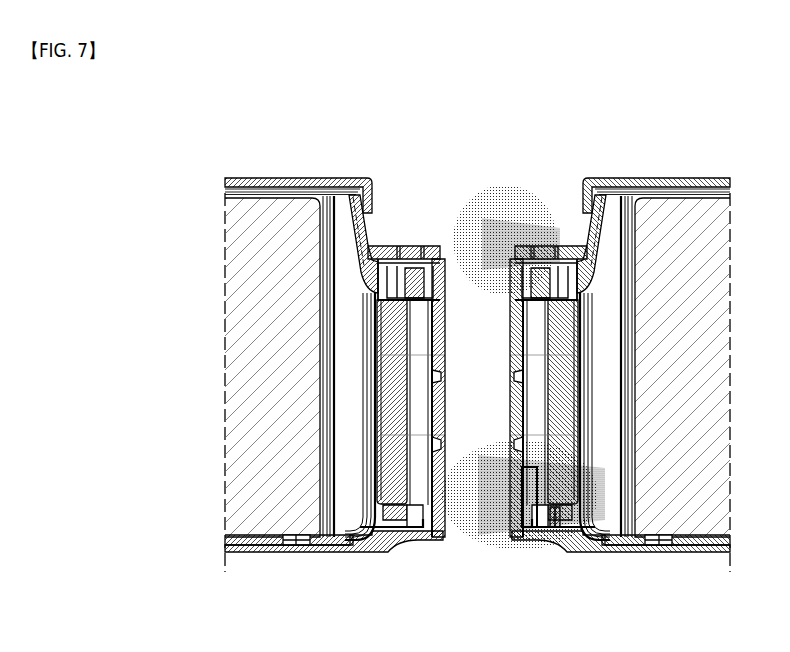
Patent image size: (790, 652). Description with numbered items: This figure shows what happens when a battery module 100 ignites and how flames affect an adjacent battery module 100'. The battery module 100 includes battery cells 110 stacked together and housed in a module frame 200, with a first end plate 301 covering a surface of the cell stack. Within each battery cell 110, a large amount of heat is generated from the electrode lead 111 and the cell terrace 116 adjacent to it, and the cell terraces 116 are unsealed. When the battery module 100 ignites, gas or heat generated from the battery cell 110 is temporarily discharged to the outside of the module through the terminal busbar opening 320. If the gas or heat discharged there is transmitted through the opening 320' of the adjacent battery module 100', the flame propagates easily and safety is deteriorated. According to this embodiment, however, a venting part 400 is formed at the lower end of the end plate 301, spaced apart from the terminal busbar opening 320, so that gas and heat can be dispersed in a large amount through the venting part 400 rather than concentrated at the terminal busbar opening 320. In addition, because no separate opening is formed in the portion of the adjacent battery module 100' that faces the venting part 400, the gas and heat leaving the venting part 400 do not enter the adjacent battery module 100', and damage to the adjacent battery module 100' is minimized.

The battery module 100 is at (561, 350).
The adjacent battery module 100' is at (335, 330).
The battery cell 110 is at (688, 522).
The electrode lead 111 is at (585, 478).
The cell terrace 116 is at (612, 525).
The module frame 200 is at (636, 178).
The first end plate 301 is at (528, 496).
The terminal busbar opening 320 is at (552, 340).
The opening of adjacent battery module 320' is at (402, 340).
The venting part 400 is at (516, 488).